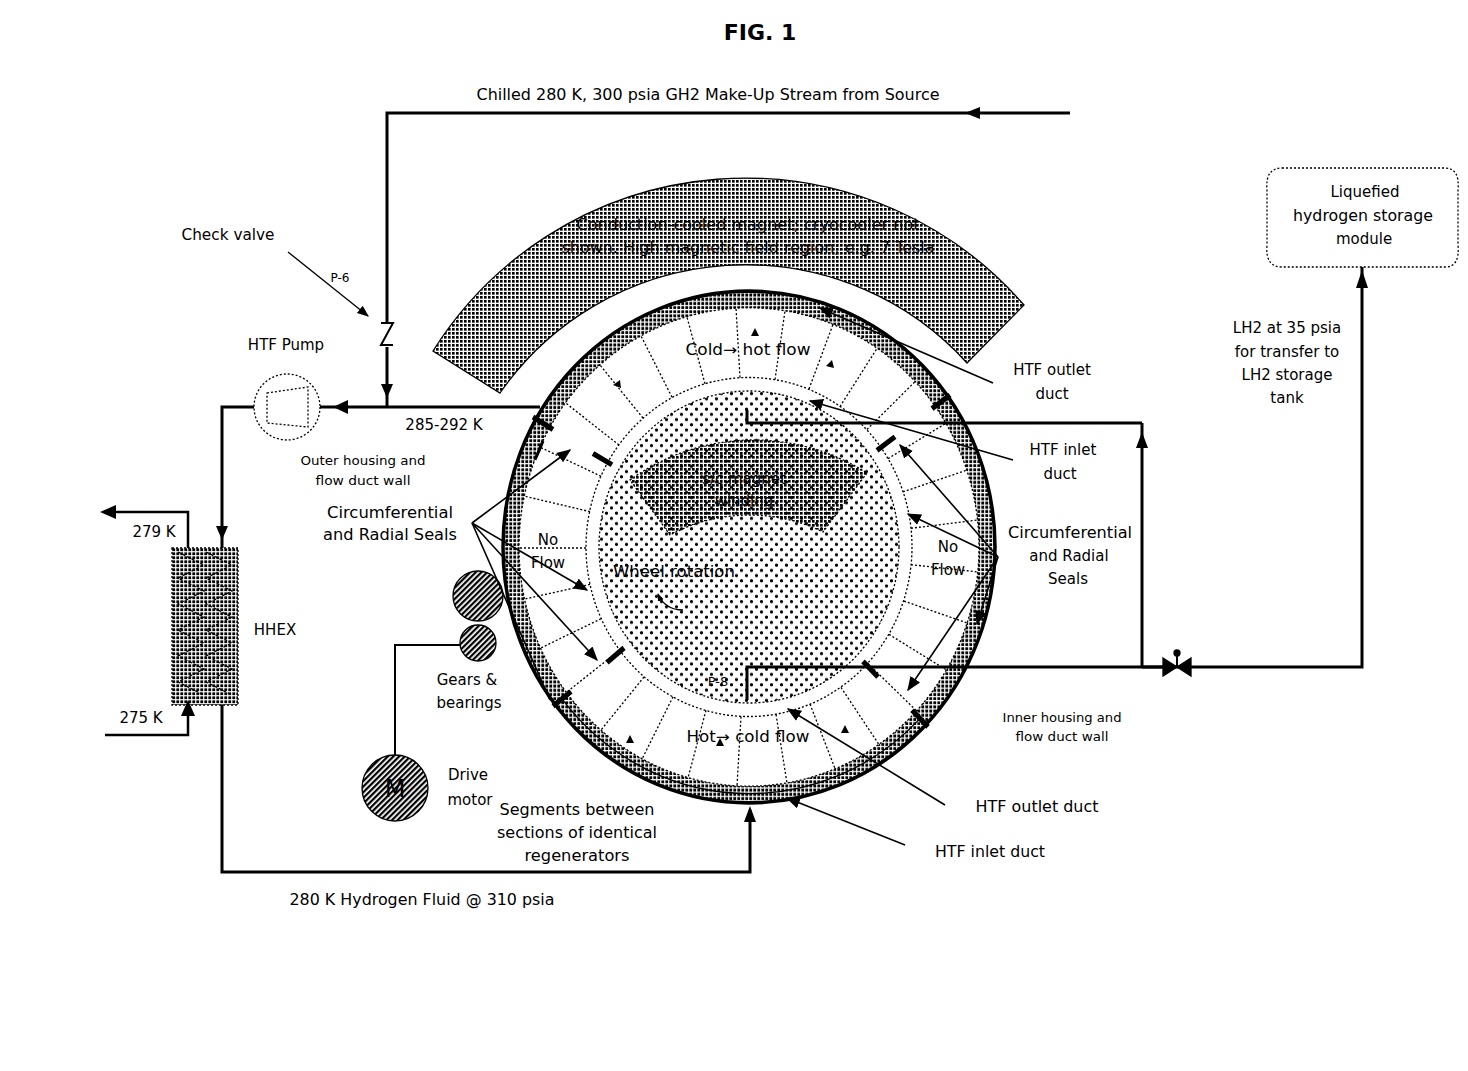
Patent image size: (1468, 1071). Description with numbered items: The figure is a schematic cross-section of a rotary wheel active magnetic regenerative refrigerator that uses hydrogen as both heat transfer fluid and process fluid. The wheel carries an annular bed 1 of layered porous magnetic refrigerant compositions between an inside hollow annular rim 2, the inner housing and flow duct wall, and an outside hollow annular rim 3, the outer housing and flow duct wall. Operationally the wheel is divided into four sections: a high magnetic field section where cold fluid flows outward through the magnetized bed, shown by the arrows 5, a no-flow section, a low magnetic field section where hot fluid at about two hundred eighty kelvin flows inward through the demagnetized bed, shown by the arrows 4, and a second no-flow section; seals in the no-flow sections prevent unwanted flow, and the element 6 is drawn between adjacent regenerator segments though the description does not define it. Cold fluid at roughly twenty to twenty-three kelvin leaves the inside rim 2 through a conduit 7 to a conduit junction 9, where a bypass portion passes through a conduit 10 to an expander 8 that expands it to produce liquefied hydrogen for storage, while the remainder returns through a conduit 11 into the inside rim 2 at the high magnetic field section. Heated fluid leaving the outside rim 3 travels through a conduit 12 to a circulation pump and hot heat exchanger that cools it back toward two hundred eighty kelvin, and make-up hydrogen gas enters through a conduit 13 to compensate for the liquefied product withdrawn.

The annular bed 1 is at (607, 710).
The inside hollow annular rim 2 is at (915, 655).
The outside hollow annular rim 3 is at (504, 473).
The arrows 4 is at (730, 778).
The arrows 5 is at (640, 412).
The radial seals between regenerator sections 6 is at (559, 668).
The conduit 7 is at (1100, 670).
The expander 8 is at (1195, 676).
The conduit junction 9 is at (1143, 672).
The conduit 10 is at (1152, 662).
The conduit 11 is at (1112, 421).
The conduit 12 is at (222, 465).
The conduit 13 is at (387, 235).